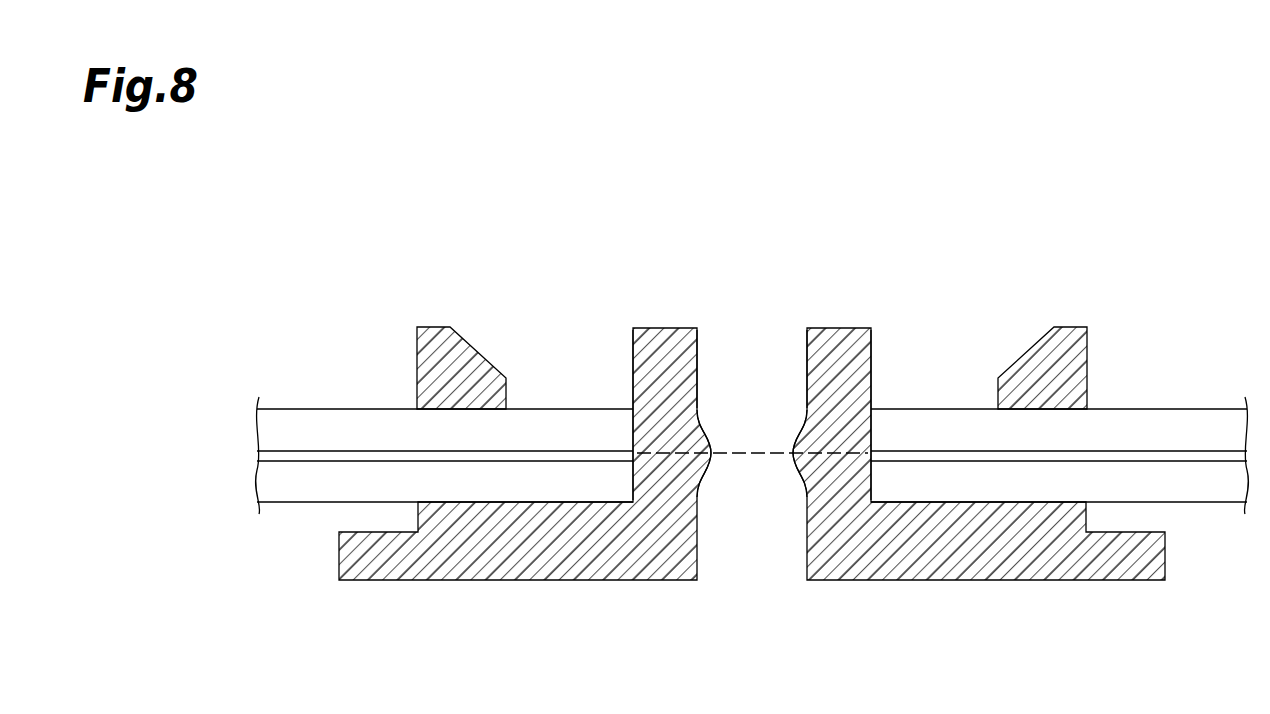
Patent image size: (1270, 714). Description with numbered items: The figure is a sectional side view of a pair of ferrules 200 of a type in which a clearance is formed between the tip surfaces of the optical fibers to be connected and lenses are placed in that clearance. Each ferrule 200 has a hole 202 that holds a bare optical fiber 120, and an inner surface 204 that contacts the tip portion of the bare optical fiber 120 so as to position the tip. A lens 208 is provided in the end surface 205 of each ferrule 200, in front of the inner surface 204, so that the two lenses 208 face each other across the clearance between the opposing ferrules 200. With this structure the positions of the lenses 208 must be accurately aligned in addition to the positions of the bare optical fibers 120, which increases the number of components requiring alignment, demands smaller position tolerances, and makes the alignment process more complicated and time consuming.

The bare optical fiber 120 is at (488, 480).
The ferrule 200 is at (624, 580).
The hole 202 is at (455, 412).
The inner surface 204 is at (633, 358).
The end surface 205 is at (697, 358).
The lens 208 is at (698, 462).